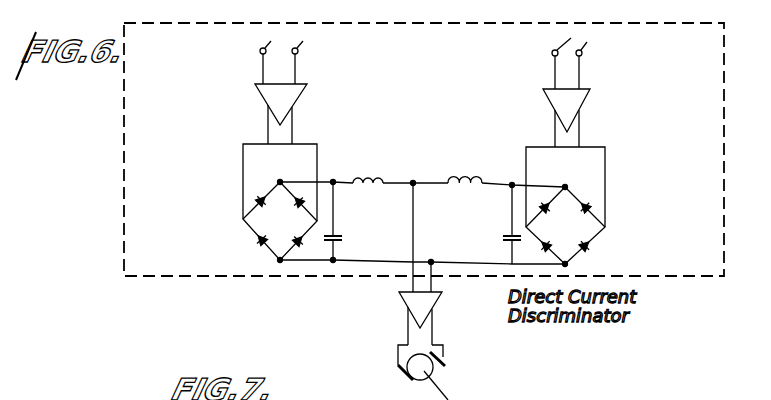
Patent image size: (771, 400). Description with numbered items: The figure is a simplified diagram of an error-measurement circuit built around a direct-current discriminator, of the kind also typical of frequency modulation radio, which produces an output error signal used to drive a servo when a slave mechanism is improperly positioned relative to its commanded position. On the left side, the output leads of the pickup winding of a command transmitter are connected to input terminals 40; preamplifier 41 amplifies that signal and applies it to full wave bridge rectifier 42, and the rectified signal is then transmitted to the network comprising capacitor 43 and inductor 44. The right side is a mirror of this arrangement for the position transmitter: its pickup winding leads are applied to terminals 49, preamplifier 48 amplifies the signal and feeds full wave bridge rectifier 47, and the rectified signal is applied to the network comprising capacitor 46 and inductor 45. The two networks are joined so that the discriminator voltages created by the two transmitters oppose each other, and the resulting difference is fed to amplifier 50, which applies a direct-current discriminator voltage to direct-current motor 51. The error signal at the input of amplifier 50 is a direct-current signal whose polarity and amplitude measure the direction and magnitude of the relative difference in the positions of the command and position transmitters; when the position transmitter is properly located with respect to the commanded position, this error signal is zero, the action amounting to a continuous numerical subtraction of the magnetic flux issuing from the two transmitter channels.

The input terminals 40 is at (281, 56).
The preamplifier 41 is at (259, 97).
The full wave bridge rectifier 42 is at (248, 232).
The capacitor 43 is at (335, 231).
The inductor 44 is at (370, 177).
The inductor 45 is at (462, 178).
The capacitor 46 is at (505, 231).
The full wave bridge rectifier 47 is at (578, 186).
The preamplifier 48 is at (593, 102).
The terminals 49 is at (572, 58).
The amplifier 50 is at (408, 305).
The direct-current motor 51 is at (420, 383).